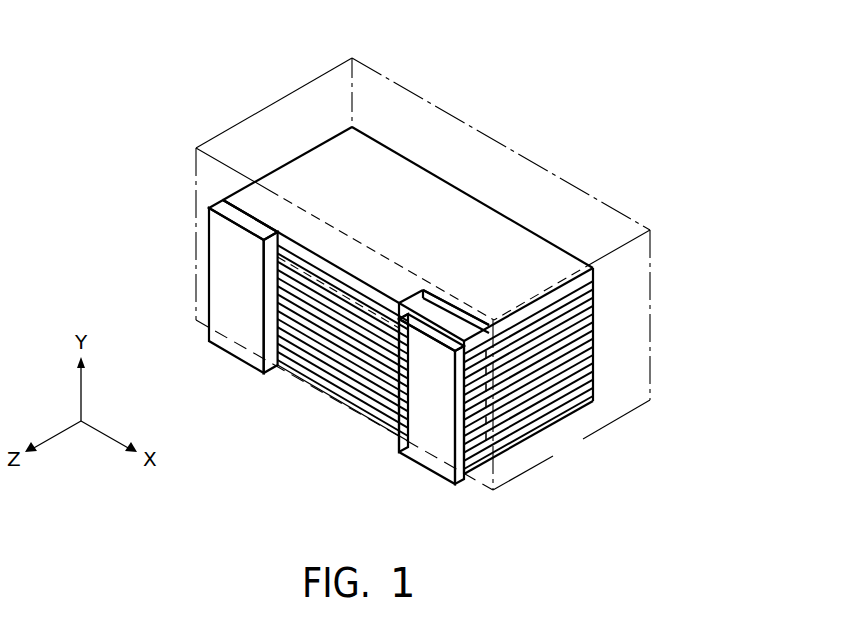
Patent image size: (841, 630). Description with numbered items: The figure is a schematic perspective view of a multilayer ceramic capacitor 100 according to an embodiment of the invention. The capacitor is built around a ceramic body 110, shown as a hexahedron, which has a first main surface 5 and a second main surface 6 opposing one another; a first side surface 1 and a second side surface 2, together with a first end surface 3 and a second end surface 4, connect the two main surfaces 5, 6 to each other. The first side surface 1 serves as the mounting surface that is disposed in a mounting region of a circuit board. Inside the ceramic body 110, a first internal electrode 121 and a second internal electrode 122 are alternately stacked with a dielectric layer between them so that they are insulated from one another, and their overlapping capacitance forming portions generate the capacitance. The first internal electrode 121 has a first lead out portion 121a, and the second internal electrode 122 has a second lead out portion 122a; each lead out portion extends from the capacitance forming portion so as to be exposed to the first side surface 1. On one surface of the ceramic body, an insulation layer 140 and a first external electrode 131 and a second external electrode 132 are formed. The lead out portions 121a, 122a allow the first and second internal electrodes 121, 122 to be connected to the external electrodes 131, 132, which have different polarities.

The multilayer ceramic capacitor 100 is at (114, 231).
The ceramic body 110 is at (493, 157).
The first side surface 1 is at (306, 362).
The second side surface 2 is at (534, 146).
The first end surface 3 is at (258, 98).
The second end surface 4 is at (632, 316).
The first main surface 5 is at (318, 100).
The second main surface 6 is at (574, 451).
The first internal electrode 121 is at (400, 168).
The first lead out portion 121a is at (248, 202).
The second internal electrode 122 is at (597, 281).
The second lead out portion 122a is at (462, 336).
The first external electrode 131 is at (238, 318).
The second external electrode 132 is at (425, 425).
The insulation layer 140 is at (321, 404).